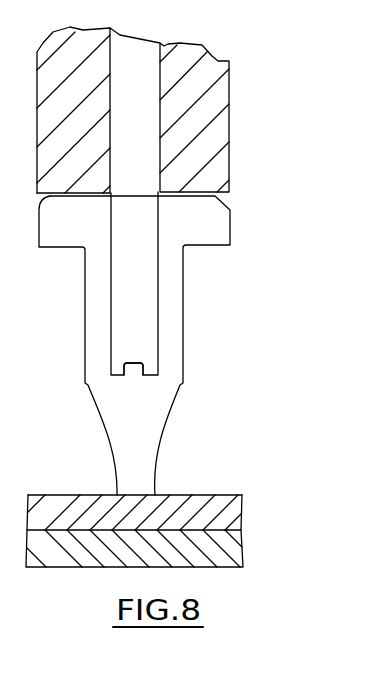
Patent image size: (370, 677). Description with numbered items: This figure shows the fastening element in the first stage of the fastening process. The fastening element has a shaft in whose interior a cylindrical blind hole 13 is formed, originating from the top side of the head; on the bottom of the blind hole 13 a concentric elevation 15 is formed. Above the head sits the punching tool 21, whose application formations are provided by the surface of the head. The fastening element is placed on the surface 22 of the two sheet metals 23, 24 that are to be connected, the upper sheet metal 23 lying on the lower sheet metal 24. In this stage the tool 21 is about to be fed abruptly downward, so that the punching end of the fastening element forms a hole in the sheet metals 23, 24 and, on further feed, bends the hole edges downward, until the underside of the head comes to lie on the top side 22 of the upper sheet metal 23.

The punching tool 21 is at (215, 97).
The blind hole 13 is at (138, 272).
The concentric elevation 15 is at (137, 363).
The surface of the sheet metals 22 is at (176, 495).
The upper sheet metal 23 is at (230, 511).
The lower sheet metal 24 is at (225, 542).